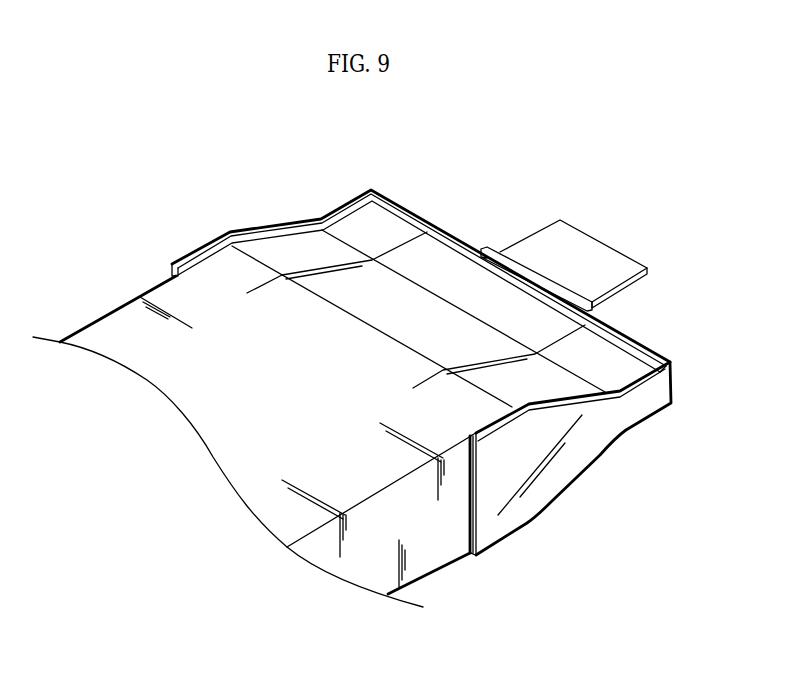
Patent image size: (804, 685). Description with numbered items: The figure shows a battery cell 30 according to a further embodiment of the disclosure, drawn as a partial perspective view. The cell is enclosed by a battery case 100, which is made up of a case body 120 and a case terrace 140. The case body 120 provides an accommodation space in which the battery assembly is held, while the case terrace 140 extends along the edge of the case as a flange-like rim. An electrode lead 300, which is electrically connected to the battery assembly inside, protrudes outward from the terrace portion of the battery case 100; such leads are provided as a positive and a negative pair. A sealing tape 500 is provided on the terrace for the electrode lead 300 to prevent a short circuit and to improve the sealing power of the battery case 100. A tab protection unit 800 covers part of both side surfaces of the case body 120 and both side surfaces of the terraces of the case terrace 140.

The battery cell 30 is at (150, 189).
The battery case 100 is at (449, 597).
The case body 120 is at (428, 556).
The case terrace 140 is at (639, 362).
The electrode lead 300 is at (567, 237).
The sealing tape 500 is at (489, 251).
The tab protection unit 800 is at (569, 503).